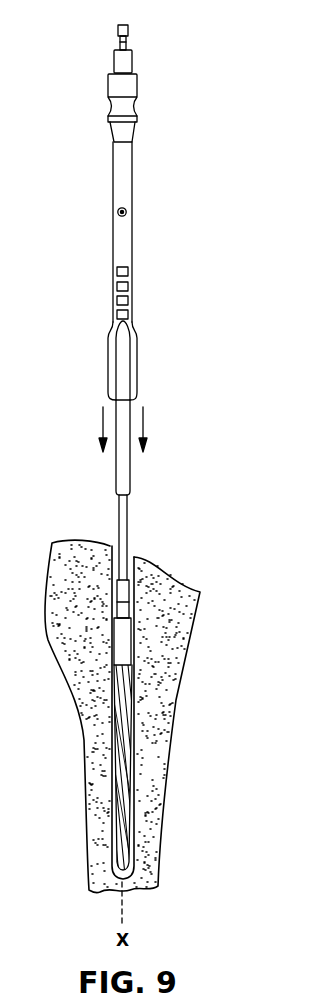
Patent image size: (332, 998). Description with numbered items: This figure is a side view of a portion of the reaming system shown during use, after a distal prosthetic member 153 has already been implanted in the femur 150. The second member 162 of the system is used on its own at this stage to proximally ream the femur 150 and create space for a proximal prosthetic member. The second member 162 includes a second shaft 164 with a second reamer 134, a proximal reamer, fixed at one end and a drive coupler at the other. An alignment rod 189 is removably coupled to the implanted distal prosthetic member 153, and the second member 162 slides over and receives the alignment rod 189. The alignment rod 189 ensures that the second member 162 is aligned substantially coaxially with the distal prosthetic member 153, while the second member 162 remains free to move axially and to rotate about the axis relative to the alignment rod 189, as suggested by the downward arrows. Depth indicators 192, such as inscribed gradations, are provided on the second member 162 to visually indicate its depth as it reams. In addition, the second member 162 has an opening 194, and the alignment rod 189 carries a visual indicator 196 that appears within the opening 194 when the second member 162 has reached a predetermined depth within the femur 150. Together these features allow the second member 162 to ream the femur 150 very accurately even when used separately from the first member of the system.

The second member 162 is at (141, 163).
The second shaft 164 is at (120, 240).
The opening 194 is at (117, 212).
The depth indicators 192 is at (140, 262).
The second reamer 134 is at (128, 355).
The visual indicator 196 is at (122, 478).
The alignment rod 189 is at (121, 522).
The femur 150 is at (160, 636).
The distal prosthetic member 153 is at (121, 778).